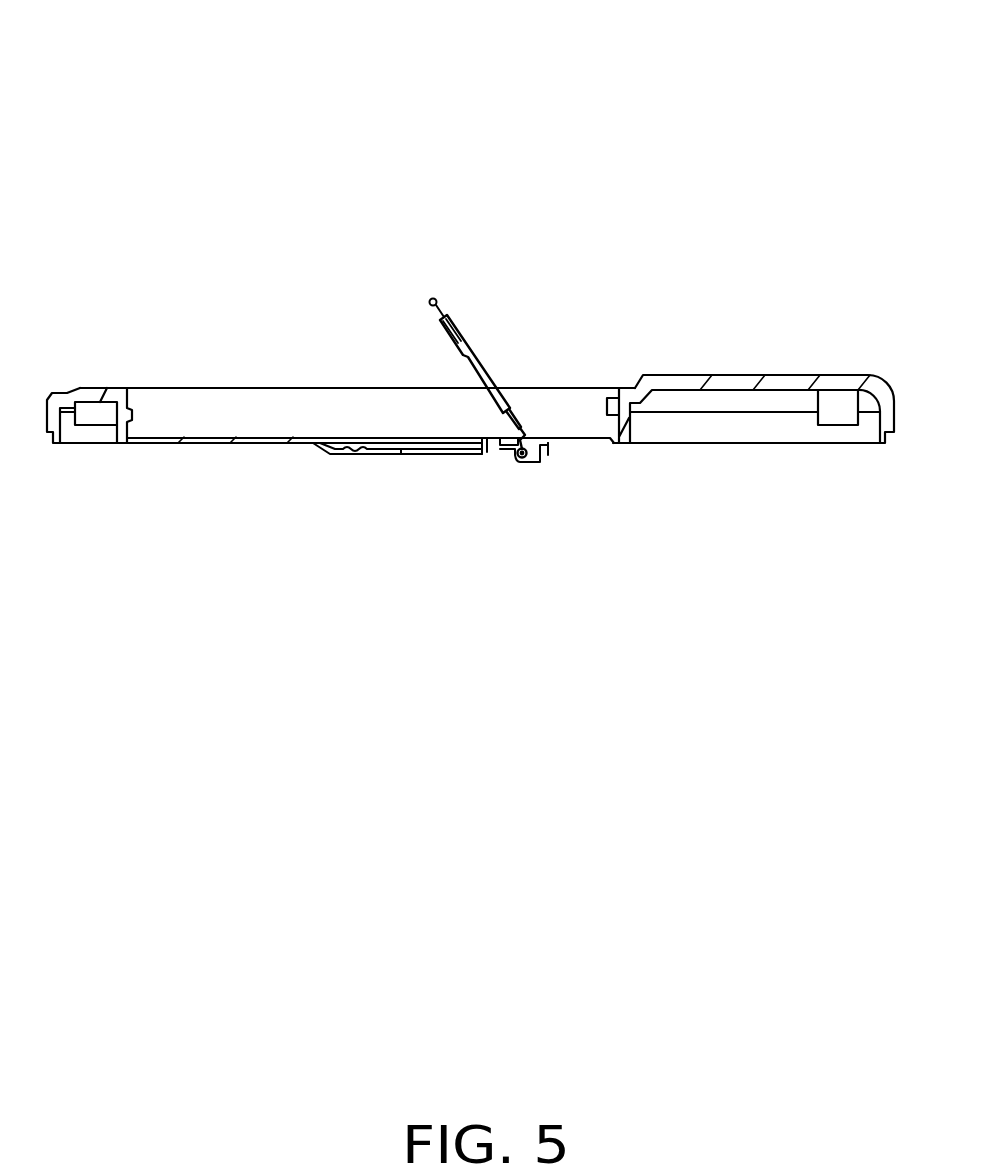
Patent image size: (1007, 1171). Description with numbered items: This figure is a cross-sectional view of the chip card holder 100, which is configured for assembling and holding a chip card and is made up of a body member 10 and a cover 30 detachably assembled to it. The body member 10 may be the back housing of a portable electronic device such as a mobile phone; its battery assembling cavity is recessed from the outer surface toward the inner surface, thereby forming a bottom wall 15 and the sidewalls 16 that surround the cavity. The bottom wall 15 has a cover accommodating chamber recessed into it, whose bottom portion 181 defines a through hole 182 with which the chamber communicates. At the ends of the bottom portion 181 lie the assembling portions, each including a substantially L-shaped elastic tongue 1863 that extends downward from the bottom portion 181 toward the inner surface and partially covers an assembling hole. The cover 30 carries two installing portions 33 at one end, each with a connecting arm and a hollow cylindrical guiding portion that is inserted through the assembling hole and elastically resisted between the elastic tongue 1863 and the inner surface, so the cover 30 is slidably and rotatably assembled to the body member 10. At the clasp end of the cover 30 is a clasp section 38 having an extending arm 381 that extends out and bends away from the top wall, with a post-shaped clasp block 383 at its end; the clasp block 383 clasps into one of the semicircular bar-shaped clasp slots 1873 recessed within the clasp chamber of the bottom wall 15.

The chip card holder 100 is at (275, 87).
The body member 10 is at (830, 385).
The sidewalls 16 is at (217, 408).
The cover 30 is at (480, 358).
The clasp section 38 is at (580, 195).
The clasp block 383 is at (436, 297).
The extending arm 381 is at (449, 307).
The bottom wall 15 is at (542, 455).
The installing portions 33 is at (518, 463).
The elastic tongue 1863 is at (510, 455).
The bottom portion 181 is at (382, 453).
The through hole 182 is at (418, 456).
The clasp slots 1873 is at (345, 453).